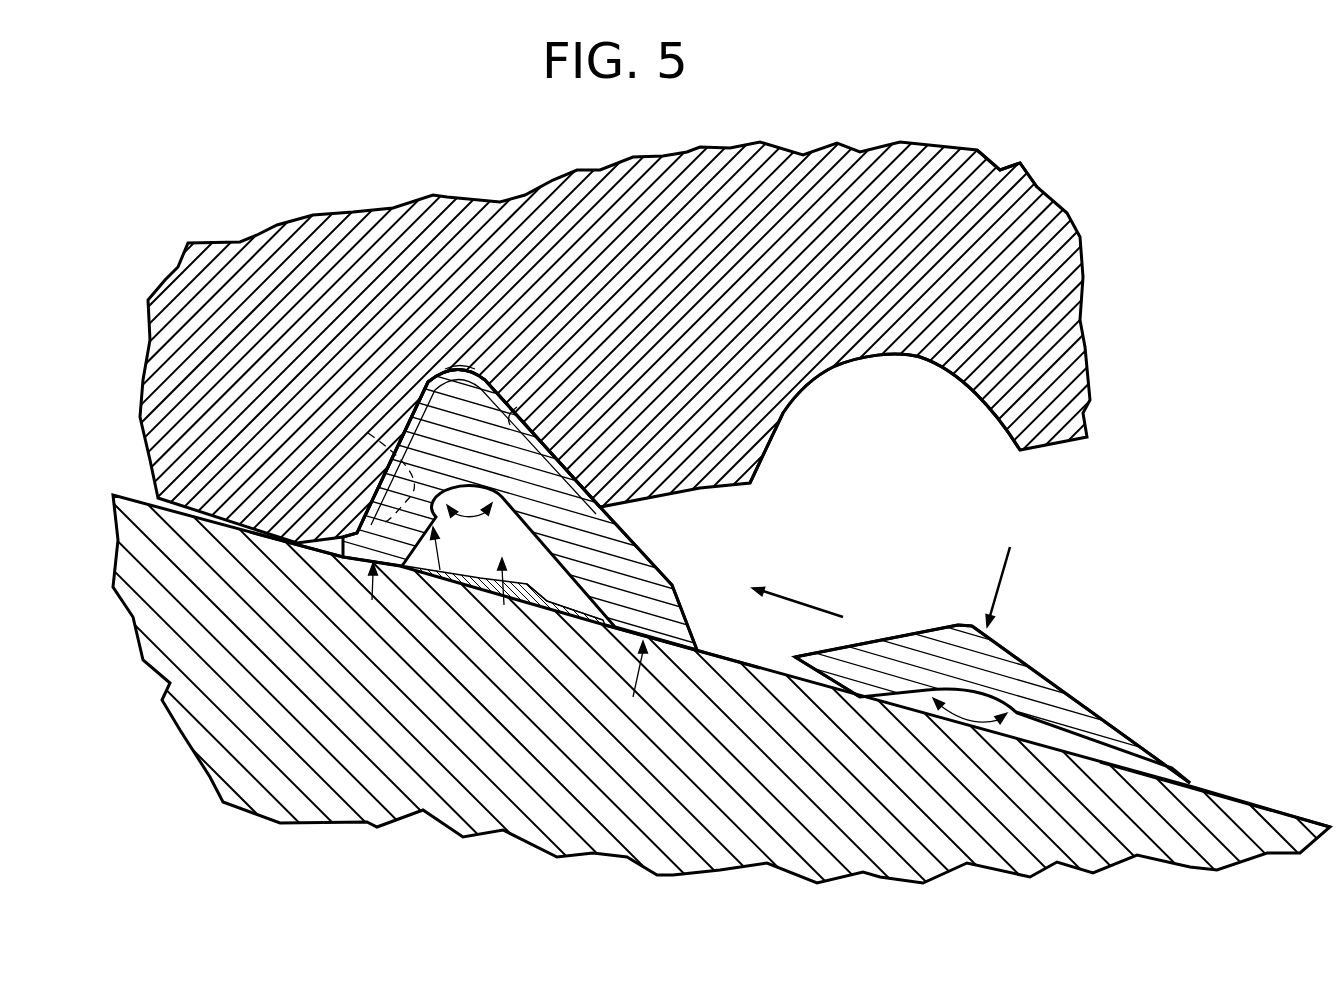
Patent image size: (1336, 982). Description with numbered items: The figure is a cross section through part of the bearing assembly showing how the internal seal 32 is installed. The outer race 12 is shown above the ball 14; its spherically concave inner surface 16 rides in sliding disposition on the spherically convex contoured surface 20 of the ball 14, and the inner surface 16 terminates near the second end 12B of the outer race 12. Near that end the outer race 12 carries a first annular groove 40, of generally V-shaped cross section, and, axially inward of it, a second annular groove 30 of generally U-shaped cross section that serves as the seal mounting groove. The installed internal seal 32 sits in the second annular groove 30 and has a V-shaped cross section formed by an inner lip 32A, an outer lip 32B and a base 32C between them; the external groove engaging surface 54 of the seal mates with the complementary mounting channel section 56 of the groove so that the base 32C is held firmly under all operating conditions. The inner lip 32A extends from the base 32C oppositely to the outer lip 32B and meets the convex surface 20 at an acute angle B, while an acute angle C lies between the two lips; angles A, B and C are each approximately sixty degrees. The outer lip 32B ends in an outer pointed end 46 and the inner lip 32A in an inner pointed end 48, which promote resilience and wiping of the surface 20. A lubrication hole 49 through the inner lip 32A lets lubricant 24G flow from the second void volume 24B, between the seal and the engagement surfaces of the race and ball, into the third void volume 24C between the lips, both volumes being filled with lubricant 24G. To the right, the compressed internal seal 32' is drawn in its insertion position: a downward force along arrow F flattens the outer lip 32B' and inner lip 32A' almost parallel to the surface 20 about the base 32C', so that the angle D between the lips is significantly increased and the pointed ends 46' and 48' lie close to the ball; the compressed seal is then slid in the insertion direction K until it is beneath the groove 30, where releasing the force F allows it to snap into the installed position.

The outer race 12 is at (1053, 262).
The second end 12B is at (1058, 178).
The ball 14 is at (163, 632).
The inner surface 16 is at (333, 547).
The spherically convex contoured surface 20 is at (313, 537).
The second void volume 24B is at (333, 550).
The third void volume 24C is at (505, 598).
The lubricant 24G is at (550, 623).
The second annular groove 30 is at (517, 407).
The internal seal 32 is at (520, 496).
The inner lip 32A is at (415, 589).
The outer lip 32B is at (611, 515).
The base 32C is at (438, 325).
The compressed internal seal 32' is at (990, 696).
The compressed inner lip 32A' is at (876, 609).
The compressed outer lip 32B' is at (1081, 704).
The flattened lip top 32C' is at (1013, 612).
The first annular groove 40 is at (945, 366).
The outer pointed end 46 is at (682, 669).
The flattened lip base contact point 46' is at (1215, 777).
The inner pointed end 48 is at (348, 598).
The flattened lip foot 48' is at (795, 660).
The lubrication hole 49 is at (375, 447).
The external groove engaging surface 54 is at (490, 362).
The mounting channel section 56 is at (428, 375).
The angle A is at (519, 577).
The angle B is at (452, 560).
The angle C is at (475, 517).
The angle D is at (990, 727).
The force arrow F is at (1013, 550).
The insertion direction arrow K is at (798, 596).